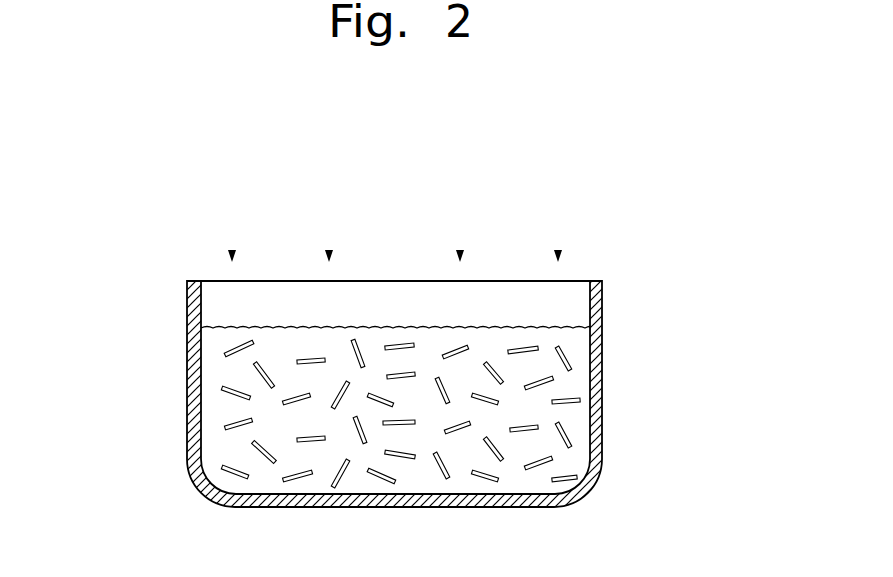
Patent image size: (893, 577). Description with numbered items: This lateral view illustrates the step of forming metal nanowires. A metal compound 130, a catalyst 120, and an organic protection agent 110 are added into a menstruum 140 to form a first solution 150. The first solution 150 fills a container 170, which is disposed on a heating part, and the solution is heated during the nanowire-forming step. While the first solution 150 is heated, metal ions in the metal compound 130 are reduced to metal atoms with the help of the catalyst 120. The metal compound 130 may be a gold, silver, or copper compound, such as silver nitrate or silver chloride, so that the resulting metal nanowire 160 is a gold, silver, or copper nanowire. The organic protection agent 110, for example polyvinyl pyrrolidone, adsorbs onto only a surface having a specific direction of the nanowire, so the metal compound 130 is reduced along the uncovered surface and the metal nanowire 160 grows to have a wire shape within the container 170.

The organic protection agent 110 is at (232, 250).
The catalyst 120 is at (329, 250).
The metal compound 130 is at (460, 250).
The menstruum 140 is at (558, 250).
The first solution 150 is at (580, 422).
The metal nanowire 160 is at (560, 350).
The container 170 is at (598, 302).